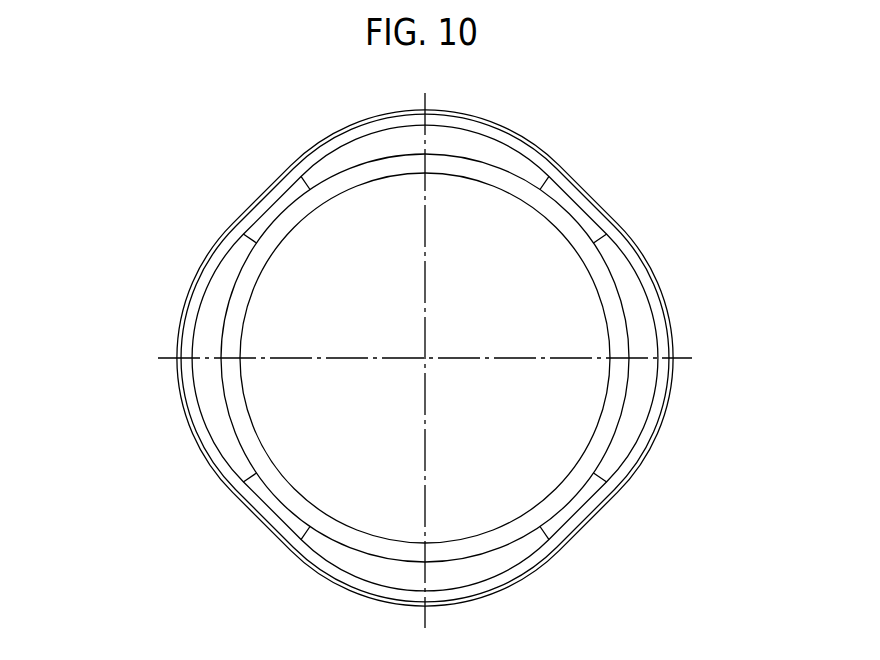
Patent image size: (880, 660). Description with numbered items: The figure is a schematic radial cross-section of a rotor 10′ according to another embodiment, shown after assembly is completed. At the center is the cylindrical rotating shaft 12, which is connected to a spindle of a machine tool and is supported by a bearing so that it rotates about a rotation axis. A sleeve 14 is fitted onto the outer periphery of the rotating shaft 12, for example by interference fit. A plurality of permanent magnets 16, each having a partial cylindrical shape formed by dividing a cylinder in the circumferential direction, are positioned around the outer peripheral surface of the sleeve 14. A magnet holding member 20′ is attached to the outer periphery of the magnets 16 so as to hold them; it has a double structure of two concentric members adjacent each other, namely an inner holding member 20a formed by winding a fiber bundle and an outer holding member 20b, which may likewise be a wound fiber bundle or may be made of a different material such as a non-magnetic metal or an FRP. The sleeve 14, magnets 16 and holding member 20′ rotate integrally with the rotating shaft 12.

The rotor 10′ is at (192, 210).
The rotating shaft 12 is at (367, 207).
The sleeve 14 is at (285, 220).
The permanent magnets 16 is at (625, 282).
The magnet holding member 20′ is at (646, 94).
The inner holding member 20a is at (540, 164).
The outer holding member 20b is at (522, 135).